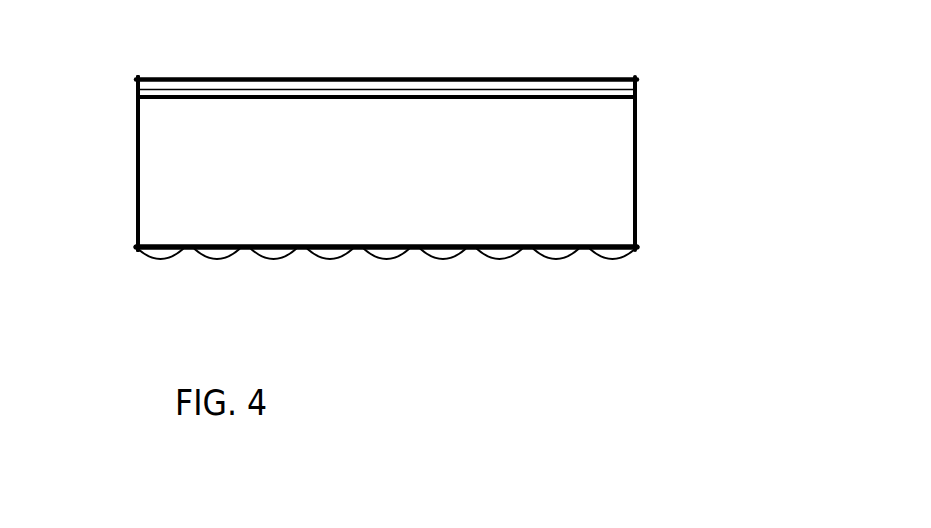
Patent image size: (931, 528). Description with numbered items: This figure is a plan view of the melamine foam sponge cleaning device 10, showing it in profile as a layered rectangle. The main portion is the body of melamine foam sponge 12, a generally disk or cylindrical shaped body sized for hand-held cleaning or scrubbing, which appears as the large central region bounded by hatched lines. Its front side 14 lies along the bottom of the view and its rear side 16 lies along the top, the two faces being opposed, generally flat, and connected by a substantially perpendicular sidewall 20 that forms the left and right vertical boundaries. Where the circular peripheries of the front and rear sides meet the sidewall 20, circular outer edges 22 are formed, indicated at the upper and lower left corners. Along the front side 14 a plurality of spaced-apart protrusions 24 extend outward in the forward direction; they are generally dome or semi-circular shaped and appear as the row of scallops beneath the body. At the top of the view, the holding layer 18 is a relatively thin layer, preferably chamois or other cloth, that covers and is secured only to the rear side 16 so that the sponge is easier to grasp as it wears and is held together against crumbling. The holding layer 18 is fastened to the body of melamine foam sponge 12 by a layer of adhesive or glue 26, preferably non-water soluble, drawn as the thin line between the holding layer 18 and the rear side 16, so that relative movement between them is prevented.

The melamine foam sponge cleaning device 10 is at (738, 122).
The body of melamine foam sponge 12 is at (637, 222).
The front side 14 is at (303, 250).
The rear side 16 is at (567, 97).
The holding layer 18 is at (637, 91).
The sidewall 20 is at (137, 178).
The circular outer edges 22 is at (137, 78).
The protrusions 24 is at (442, 258).
The layer of adhesive or glue 26 is at (543, 88).